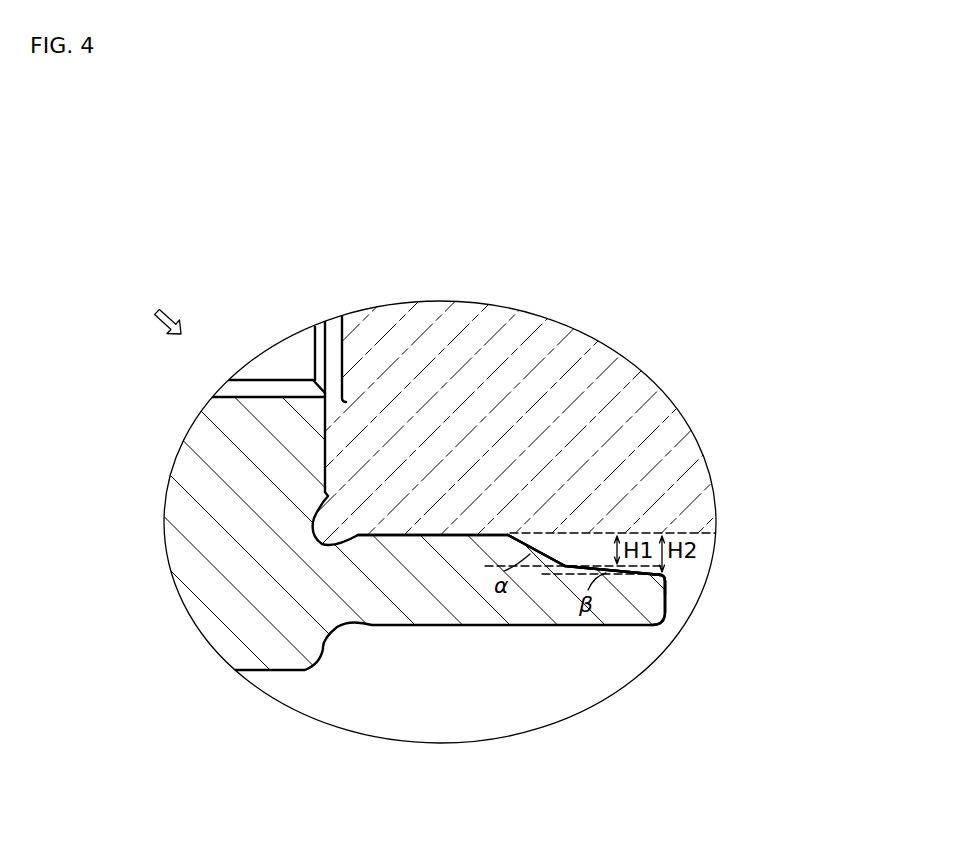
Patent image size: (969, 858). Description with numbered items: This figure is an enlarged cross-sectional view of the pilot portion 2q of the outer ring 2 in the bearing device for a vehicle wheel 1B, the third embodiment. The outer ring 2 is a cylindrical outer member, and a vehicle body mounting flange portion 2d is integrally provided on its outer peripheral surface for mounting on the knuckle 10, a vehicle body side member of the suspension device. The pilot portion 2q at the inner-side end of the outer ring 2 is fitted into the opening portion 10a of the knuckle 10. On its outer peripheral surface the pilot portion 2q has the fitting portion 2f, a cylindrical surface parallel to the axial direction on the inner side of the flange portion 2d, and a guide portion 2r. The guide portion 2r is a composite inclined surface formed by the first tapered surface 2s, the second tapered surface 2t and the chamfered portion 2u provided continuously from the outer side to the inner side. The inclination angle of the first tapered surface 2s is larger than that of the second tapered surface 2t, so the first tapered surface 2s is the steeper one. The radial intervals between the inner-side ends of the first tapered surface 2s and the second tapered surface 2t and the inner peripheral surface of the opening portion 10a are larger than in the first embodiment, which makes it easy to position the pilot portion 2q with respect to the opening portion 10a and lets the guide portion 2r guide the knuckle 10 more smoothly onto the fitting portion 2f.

The outer ring 2 is at (227, 577).
The vehicle body mounting flange portion 2d is at (253, 440).
The fitting portion 2f is at (394, 535).
The pilot portion 2q is at (691, 581).
The guide portion 2r is at (822, 407).
The first tapered surface 2s is at (548, 563).
The second tapered surface 2t is at (592, 566).
The chamfered portion 2u is at (668, 574).
The knuckle 10 is at (613, 466).
The opening portion 10a is at (546, 533).
The bearing device for a vehicle wheel 1B is at (158, 309).